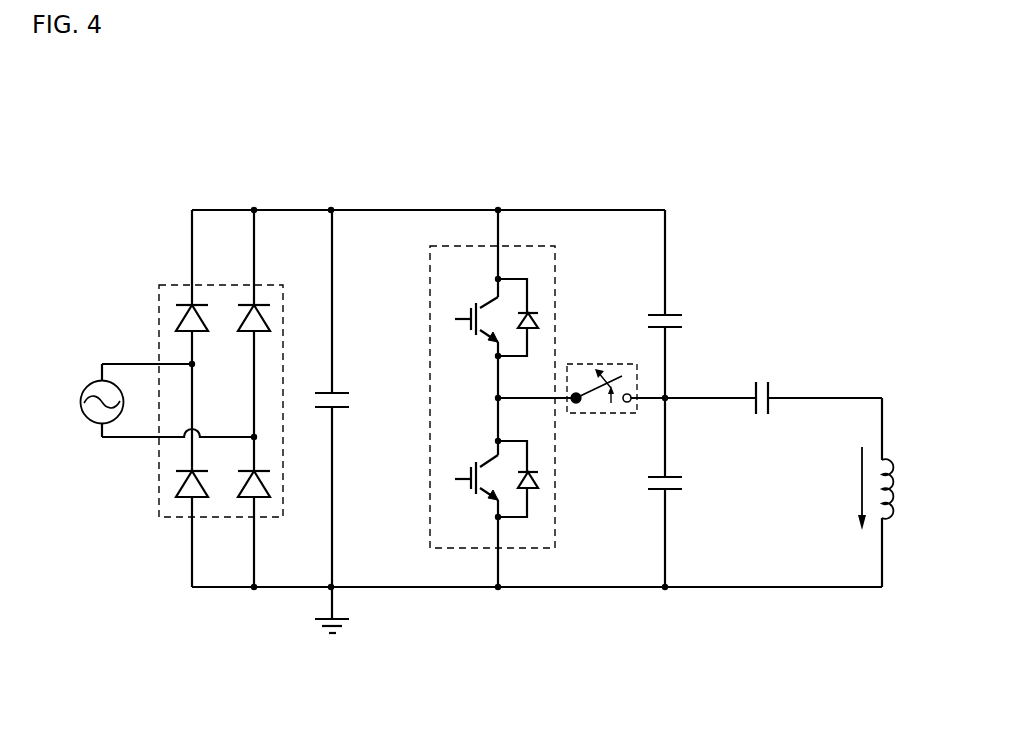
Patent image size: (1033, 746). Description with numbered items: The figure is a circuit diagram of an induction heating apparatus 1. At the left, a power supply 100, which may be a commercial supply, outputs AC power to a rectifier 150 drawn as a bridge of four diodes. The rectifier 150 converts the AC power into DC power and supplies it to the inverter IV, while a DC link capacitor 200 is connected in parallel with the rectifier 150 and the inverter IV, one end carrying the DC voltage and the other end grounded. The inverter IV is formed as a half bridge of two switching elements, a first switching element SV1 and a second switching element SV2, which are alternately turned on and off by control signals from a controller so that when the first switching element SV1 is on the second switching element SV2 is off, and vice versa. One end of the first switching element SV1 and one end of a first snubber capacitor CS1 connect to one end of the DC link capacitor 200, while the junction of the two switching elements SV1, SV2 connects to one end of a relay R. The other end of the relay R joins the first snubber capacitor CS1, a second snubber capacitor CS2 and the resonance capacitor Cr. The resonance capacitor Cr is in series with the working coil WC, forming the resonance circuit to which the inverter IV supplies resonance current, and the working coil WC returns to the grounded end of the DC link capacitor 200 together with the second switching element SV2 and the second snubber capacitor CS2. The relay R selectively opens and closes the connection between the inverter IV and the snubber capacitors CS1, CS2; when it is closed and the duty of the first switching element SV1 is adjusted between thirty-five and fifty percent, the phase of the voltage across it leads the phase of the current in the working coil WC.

The induction heating apparatus 1 is at (167, 90).
The power supply 100 is at (88, 422).
The rectifier 150 is at (175, 517).
The DC link capacitor 200 is at (335, 392).
The inverter IV is at (518, 246).
The first switching element SV1 is at (485, 299).
The second switching element SV2 is at (483, 493).
The relay R is at (605, 362).
The first snubber capacitor CS1 is at (670, 310).
The second snubber capacitor CS2 is at (670, 473).
The resonance capacitor Cr is at (772, 387).
The working coil WC is at (887, 462).